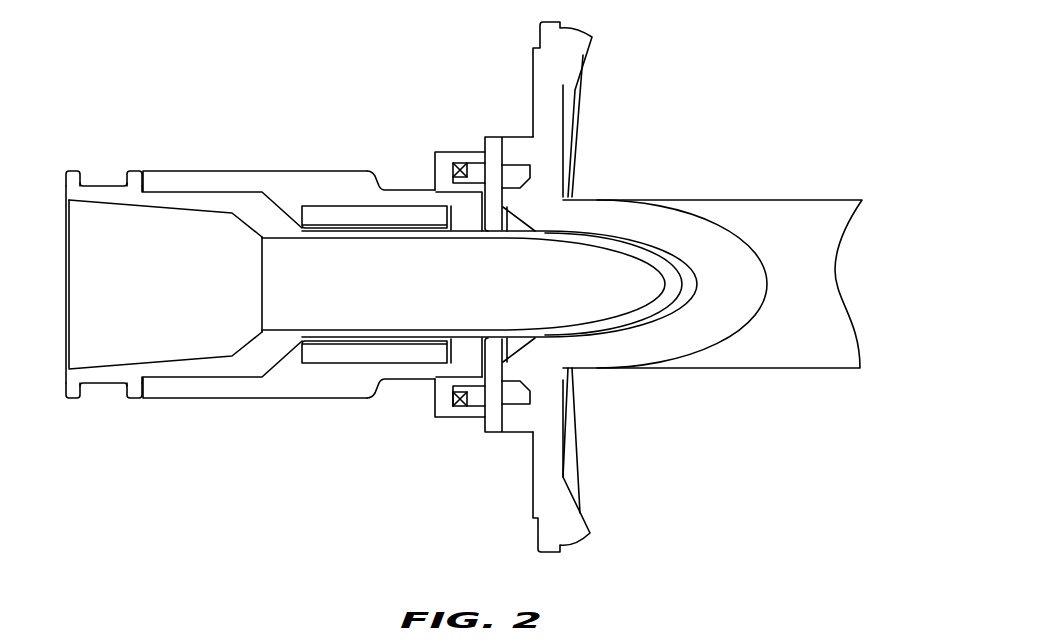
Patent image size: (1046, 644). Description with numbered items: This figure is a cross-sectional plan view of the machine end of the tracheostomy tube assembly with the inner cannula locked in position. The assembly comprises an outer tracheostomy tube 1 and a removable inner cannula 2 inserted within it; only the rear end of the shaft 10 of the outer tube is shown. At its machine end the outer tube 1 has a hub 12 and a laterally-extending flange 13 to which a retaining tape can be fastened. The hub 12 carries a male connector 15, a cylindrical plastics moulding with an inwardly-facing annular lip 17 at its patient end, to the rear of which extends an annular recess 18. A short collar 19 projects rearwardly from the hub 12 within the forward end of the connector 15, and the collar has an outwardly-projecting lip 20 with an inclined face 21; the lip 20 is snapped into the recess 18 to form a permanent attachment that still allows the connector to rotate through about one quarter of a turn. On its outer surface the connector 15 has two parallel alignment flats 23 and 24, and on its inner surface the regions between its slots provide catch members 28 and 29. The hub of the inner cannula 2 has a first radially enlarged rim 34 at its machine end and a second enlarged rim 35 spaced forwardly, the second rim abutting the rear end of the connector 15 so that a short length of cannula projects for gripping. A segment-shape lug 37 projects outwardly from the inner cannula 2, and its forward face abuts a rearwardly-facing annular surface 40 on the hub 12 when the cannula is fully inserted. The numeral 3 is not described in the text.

The outer tracheostomy tube 1 is at (749, 192).
The inner cannula 2 is at (603, 229).
The groove 3 is at (463, 365).
The shaft 10 is at (815, 210).
The hub 12 is at (492, 422).
The flange 13 is at (557, 85).
The male connector 15 is at (192, 176).
The annular lip 17 is at (470, 165).
The annular recess 18 is at (480, 177).
The collar 19 is at (460, 397).
The outwardly-projecting lip 20 is at (453, 163).
The inclined face 21 is at (457, 402).
The alignment flat 23 is at (388, 188).
The alignment flat 24 is at (385, 382).
The catch member 28 is at (315, 212).
The catch member 29 is at (315, 355).
The first radially enlarged rim 34 is at (76, 170).
The second enlarged rim 35 is at (139, 170).
The lug 37 is at (462, 207).
The rearwardly-facing annular surface 40 is at (480, 372).